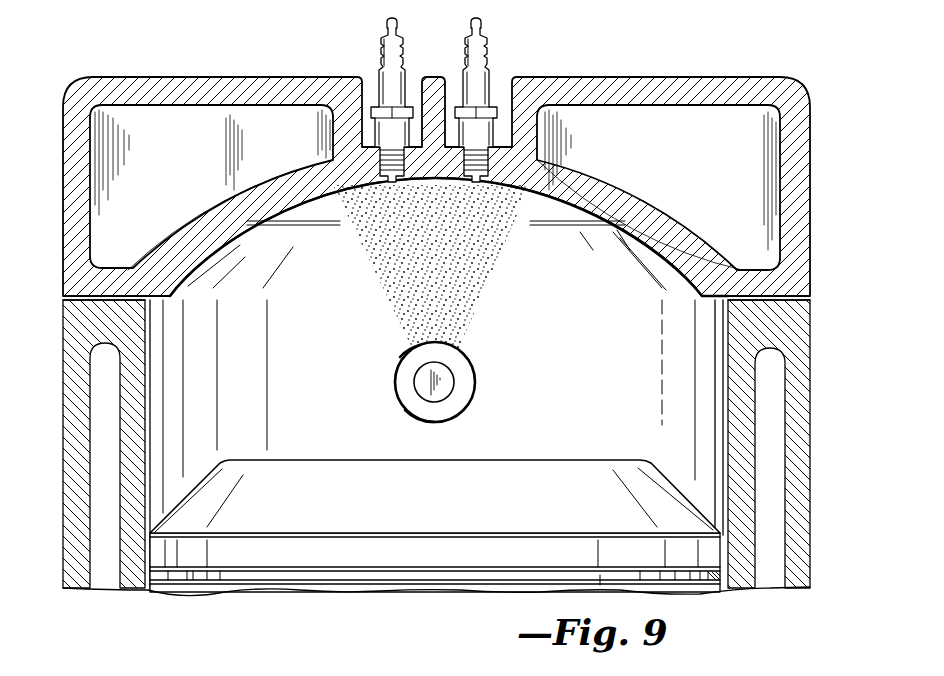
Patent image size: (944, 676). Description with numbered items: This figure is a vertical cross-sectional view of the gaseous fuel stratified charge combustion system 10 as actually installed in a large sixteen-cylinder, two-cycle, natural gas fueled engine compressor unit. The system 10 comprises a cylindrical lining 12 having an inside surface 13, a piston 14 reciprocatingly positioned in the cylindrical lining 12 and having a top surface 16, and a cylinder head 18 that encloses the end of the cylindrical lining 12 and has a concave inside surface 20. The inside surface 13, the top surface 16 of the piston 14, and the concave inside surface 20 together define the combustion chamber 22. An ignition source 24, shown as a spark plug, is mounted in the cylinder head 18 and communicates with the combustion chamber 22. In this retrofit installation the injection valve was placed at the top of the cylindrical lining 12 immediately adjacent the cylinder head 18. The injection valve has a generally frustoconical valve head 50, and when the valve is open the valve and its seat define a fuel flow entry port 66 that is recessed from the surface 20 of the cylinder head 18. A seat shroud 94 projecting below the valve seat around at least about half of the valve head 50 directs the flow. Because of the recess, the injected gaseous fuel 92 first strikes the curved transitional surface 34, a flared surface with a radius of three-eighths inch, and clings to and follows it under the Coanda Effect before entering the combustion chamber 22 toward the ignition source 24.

The gaseous fuel stratified charge combustion system 10 is at (650, 70).
The cylindrical lining 12 is at (800, 340).
The inside surface 13 is at (727, 370).
The piston 14 is at (445, 507).
The top surface 16 is at (612, 461).
The cylinder head 18 is at (758, 78).
The concave inside surface 20 is at (305, 193).
The combustion chamber 22 is at (253, 405).
The ignition source 24 is at (383, 182).
The curved transitional surface 34 is at (405, 357).
The valve head 50 is at (443, 395).
The fuel flow entry port 66 is at (455, 366).
The gaseous fuel 92 is at (480, 255).
The seat shroud 94 is at (420, 412).